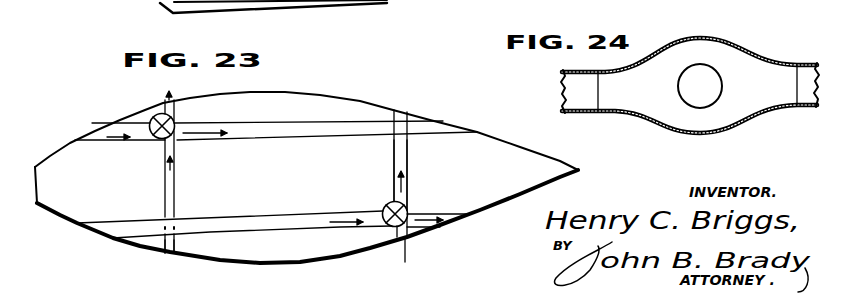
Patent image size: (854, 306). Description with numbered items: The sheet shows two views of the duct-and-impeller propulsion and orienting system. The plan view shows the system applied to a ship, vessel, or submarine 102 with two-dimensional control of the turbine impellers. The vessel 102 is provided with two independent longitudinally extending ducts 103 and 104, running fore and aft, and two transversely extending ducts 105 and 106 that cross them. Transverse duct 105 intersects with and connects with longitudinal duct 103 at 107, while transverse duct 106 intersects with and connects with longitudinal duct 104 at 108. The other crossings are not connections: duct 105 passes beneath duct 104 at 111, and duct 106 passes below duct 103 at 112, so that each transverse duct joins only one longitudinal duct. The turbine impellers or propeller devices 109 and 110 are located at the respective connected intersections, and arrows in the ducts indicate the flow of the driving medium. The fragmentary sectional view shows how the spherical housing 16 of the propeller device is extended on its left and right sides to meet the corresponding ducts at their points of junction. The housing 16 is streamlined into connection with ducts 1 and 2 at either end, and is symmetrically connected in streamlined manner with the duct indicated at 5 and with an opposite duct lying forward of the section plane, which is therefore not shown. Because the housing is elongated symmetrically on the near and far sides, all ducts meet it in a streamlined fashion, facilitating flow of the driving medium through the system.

In FIG. 23, the vessel 102 is at (292, 103).
In FIG. 23, the longitudinally extending duct 103 is at (264, 132).
In FIG. 23, the longitudinally extending duct 104 is at (278, 215).
In FIG. 23, the transverse duct 105 is at (176, 186).
In FIG. 23, the transverse duct 106 is at (410, 156).
In FIG. 23, the intersection of ducts 105 and 103 107 is at (180, 132).
In FIG. 23, the intersection of ducts 106 and 104 108 is at (413, 216).
In FIG. 23, the turbine impeller 109 is at (157, 141).
In FIG. 23, the turbine impeller 110 is at (390, 203).
In FIG. 23, the crossing of duct 105 beneath duct 104 111 is at (176, 240).
In FIG. 23, the crossing of duct 106 below duct 103 112 is at (420, 123).
In FIG. 24, the spherical housing 16 is at (728, 43).
In FIG. 24, the duct 5 is at (710, 108).
In FIG. 24, the duct 2 is at (807, 92).
In FIG. 24, the duct 1 is at (583, 98).